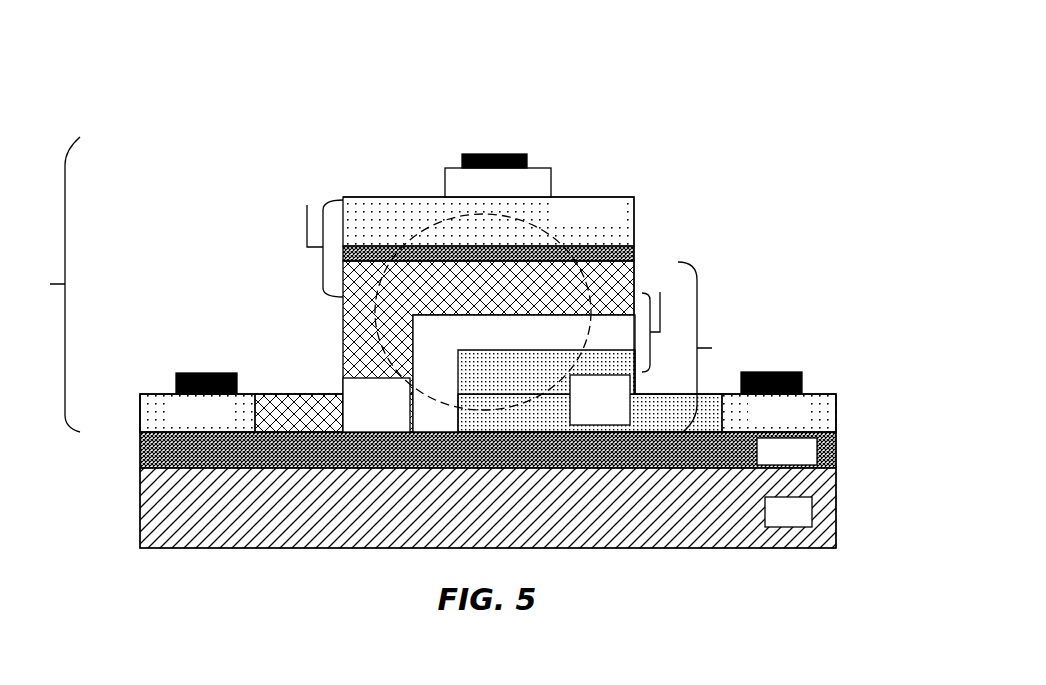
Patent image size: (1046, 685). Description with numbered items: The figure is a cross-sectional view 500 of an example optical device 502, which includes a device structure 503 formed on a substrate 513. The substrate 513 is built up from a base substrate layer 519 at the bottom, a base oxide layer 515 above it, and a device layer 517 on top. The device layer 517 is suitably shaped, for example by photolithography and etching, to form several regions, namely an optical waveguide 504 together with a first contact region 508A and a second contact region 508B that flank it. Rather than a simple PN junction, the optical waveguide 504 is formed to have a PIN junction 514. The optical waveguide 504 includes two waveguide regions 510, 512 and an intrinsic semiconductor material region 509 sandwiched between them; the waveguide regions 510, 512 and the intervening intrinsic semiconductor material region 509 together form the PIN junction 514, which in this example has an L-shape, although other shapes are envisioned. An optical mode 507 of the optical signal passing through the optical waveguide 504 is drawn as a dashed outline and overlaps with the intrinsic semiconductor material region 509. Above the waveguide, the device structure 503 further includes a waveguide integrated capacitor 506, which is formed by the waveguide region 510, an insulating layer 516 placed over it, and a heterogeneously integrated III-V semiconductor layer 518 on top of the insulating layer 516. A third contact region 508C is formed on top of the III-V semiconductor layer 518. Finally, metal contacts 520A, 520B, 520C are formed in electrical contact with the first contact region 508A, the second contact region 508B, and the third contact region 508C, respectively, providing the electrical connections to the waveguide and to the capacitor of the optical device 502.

The cross-sectional view 500 is at (647, 98).
The optical device 502 is at (638, 190).
The device structure 503 is at (43, 284).
The optical waveguide 504 is at (712, 347).
The waveguide integrated capacitor 506 is at (316, 241).
The optical mode 507 is at (440, 197).
The first contact region 508A is at (156, 398).
The second contact region 508B is at (822, 394).
The third contact region 508C is at (447, 175).
The intrinsic semiconductor material region 509 is at (524, 373).
The waveguide region 510 is at (488, 346).
The waveguide region 512 is at (590, 391).
The substrate 513 is at (858, 340).
The PIN junction 514 is at (657, 322).
The base oxide layer 515 is at (140, 460).
The insulating layer 516 is at (633, 250).
The device layer 517 is at (134, 417).
The III-V semiconductor layer 518 is at (563, 197).
The base substrate layer 519 is at (140, 517).
The metal contact 520A is at (238, 383).
The metal contact 520B is at (772, 372).
The metal contact 520C is at (497, 152).